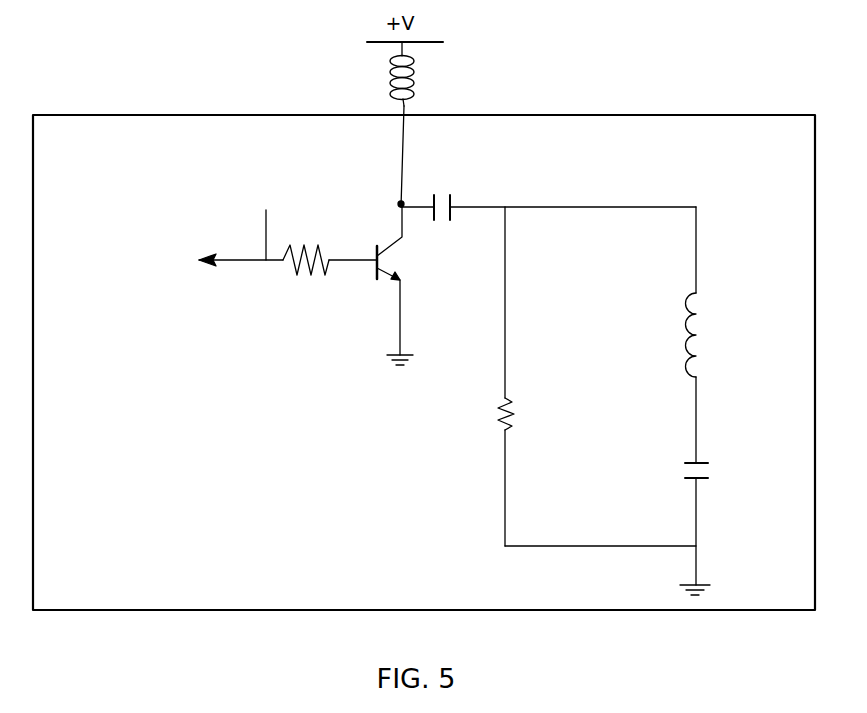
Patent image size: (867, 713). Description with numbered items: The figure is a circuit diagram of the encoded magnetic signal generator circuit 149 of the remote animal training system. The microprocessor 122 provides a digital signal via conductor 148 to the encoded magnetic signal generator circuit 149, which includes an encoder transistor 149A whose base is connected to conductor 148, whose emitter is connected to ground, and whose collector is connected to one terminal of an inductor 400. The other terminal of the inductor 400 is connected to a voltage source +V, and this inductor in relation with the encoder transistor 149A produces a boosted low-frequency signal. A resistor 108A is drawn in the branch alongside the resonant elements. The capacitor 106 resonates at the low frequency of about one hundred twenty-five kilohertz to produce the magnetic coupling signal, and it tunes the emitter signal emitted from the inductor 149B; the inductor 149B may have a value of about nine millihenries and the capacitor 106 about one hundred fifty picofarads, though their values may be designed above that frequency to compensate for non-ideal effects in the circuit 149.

The inductor 400 is at (432, 72).
The encoded magnetic signal generator circuit 149 is at (377, 195).
The encoder transistor 149A is at (397, 272).
The inductor 149B is at (682, 348).
The conductor 148 is at (252, 259).
The microprocessor 122 is at (265, 260).
The resistor 108A is at (502, 421).
The capacitor 106 is at (683, 472).